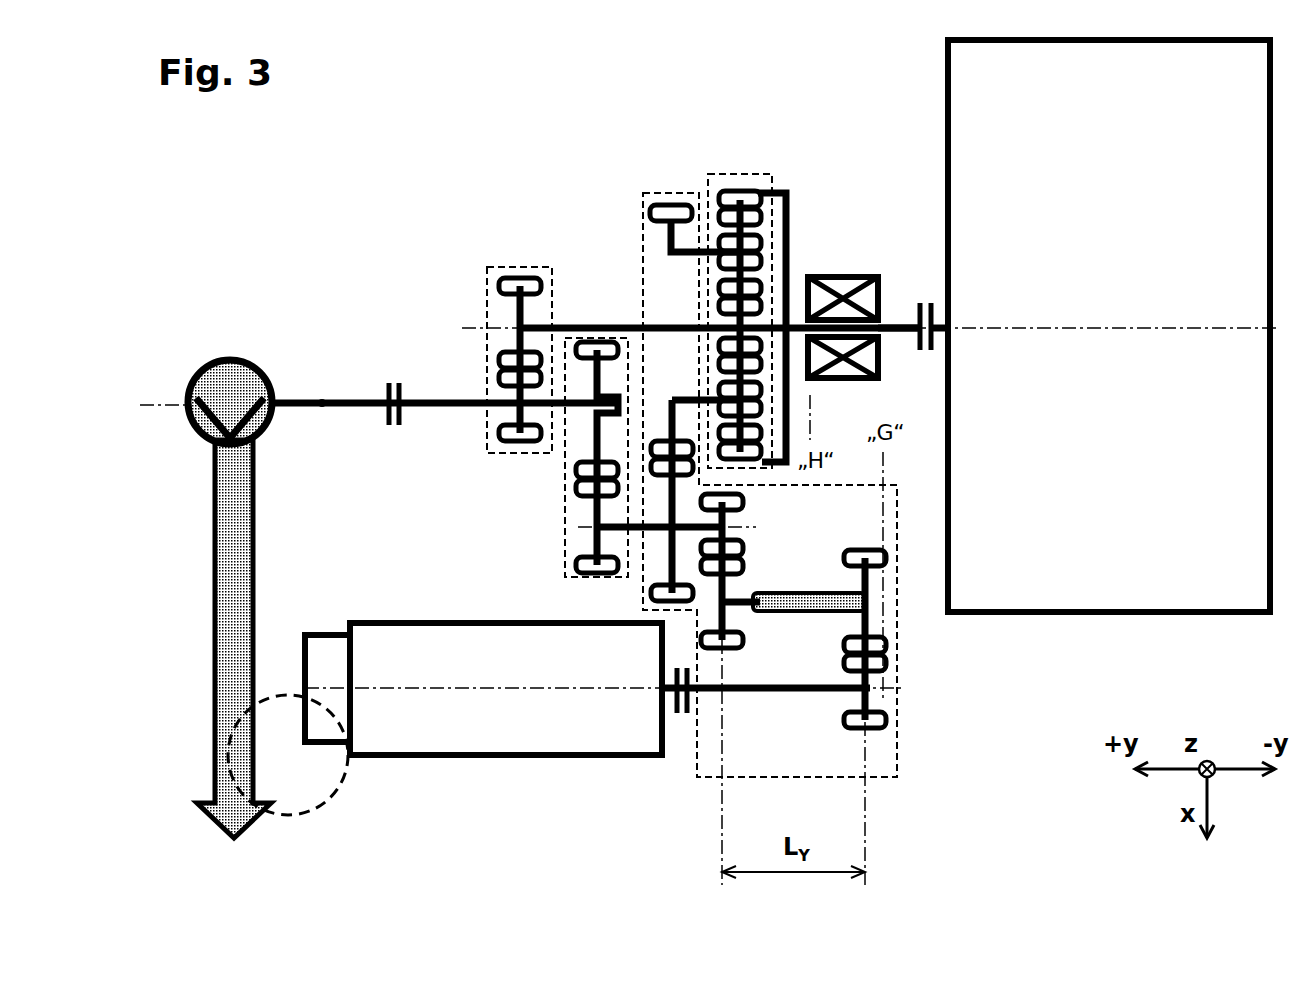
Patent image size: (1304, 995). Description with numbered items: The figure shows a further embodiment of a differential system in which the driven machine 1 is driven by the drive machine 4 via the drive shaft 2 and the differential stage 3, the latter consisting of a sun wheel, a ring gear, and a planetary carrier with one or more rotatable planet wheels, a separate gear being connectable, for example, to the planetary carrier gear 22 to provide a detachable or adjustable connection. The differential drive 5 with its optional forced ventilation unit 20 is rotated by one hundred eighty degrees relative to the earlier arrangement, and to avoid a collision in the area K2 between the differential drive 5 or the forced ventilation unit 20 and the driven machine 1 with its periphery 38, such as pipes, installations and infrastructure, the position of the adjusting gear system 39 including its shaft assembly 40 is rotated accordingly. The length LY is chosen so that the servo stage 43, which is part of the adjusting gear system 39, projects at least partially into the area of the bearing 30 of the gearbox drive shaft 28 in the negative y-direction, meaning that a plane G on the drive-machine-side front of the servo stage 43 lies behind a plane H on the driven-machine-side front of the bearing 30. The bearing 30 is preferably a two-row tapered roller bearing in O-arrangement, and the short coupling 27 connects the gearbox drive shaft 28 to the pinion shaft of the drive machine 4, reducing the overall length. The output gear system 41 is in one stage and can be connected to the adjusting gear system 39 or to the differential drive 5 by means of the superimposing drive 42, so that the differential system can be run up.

The driven machine 1 is at (257, 370).
The drive shaft 2 is at (322, 403).
The differential stage 3 is at (739, 170).
The drive machine 4 is at (1052, 612).
The differential drive 5 is at (505, 755).
The forced ventilation unit 20 is at (330, 740).
The planetary carrier gear 22 is at (671, 206).
The coupling 27 is at (925, 302).
The gearbox drive shaft 28 is at (890, 324).
The bearing 30 is at (843, 272).
The periphery 38 is at (255, 608).
The adjusting gear system 39 is at (897, 723).
The shaft assembly 40 is at (797, 612).
The output gear system 41 is at (520, 262).
The superimposing drive 42 is at (560, 506).
The servo stage 43 is at (870, 735).
The area K2 is at (292, 815).